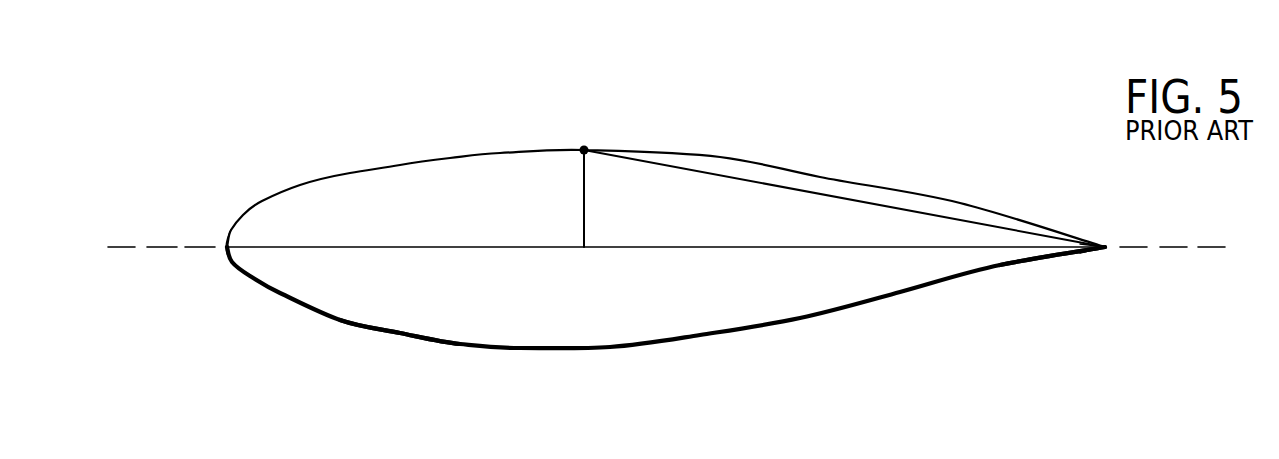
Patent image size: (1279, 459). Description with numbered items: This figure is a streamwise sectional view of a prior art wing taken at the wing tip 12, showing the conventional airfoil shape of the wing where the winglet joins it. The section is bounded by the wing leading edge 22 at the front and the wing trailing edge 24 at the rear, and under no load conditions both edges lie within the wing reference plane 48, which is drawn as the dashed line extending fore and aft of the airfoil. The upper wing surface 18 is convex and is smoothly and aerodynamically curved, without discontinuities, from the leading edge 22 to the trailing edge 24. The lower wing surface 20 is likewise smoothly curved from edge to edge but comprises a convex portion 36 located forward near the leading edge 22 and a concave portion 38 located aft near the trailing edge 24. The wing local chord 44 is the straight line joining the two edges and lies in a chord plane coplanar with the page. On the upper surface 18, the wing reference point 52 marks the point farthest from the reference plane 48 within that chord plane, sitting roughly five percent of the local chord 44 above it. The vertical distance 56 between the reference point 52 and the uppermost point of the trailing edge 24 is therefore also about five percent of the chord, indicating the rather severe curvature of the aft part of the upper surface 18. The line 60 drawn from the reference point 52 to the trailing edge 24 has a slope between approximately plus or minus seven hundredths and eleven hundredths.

The wing tip 12 is at (629, 268).
The upper wing surface 18 is at (720, 157).
The lower wing surface 20 is at (525, 350).
The wing leading edge 22 is at (226, 249).
The wing trailing edge 24 is at (1107, 246).
The convex portion 36 is at (414, 347).
The concave portion 38 is at (1058, 272).
The wing local chord 44 is at (600, 249).
The wing reference plane 48 is at (1178, 247).
The wing reference point 52 is at (586, 148).
The vertical distance 56 is at (584, 197).
The line between wing reference point and trailing edge 60 is at (818, 192).